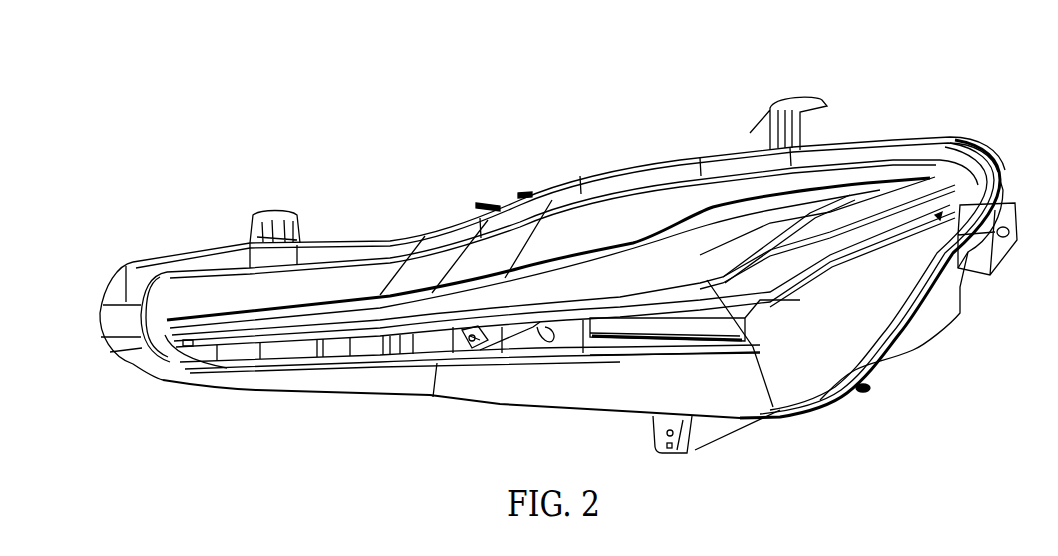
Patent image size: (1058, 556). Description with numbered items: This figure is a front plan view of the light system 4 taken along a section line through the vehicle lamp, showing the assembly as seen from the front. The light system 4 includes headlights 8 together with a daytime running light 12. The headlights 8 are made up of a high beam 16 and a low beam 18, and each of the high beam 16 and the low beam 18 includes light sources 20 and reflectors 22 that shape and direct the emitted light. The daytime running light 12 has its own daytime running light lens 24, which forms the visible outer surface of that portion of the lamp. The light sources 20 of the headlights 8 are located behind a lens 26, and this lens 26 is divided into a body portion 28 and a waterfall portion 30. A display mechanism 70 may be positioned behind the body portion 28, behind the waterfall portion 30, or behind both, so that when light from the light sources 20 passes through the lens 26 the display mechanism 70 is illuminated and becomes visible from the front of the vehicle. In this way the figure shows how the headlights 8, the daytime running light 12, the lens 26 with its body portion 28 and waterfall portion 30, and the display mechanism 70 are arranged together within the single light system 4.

The light system 4 is at (905, 112).
The headlights 8 is at (533, 366).
The daytime running light 12 is at (800, 283).
The high beam 16 is at (673, 337).
The low beam 18 is at (735, 340).
The light sources 20 is at (522, 268).
The reflectors 22 is at (778, 332).
The daytime running light lens 24 is at (866, 257).
The lens 26 is at (630, 243).
The body portion 28 is at (692, 248).
The waterfall portion 30 is at (613, 305).
The display mechanism 70 is at (659, 238).